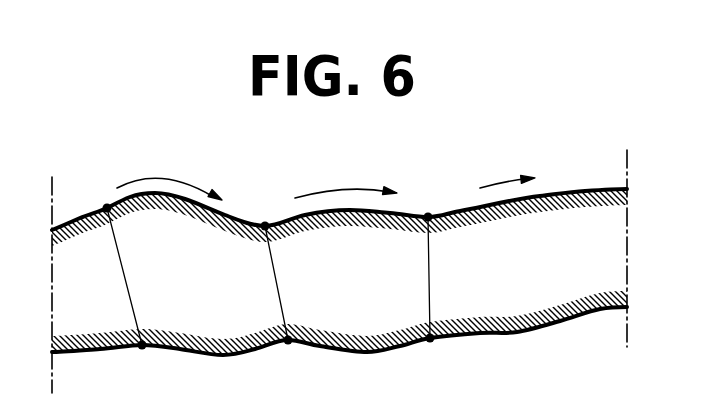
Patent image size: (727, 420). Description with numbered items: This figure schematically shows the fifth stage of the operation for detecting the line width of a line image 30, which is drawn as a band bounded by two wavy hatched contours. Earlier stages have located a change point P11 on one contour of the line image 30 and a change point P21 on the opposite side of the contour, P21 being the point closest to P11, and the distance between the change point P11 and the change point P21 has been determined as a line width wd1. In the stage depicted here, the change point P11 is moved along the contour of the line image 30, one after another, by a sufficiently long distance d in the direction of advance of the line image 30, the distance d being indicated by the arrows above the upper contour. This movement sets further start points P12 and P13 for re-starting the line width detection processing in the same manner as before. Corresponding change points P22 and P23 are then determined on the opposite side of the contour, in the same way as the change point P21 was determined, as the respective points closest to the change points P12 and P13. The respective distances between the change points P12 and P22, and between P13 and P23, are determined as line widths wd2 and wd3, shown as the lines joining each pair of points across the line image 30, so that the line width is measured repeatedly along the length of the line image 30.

The line image 30 is at (587, 191).
The change point P11 is at (104, 206).
The start point P12 is at (263, 223).
The start point P13 is at (427, 214).
The change point P21 is at (142, 349).
The change point P22 is at (288, 344).
The change point P23 is at (430, 342).
The line width wd1 is at (140, 342).
The line width wd2 is at (286, 338).
The line width wd3 is at (426, 220).
The distance d is at (188, 182).